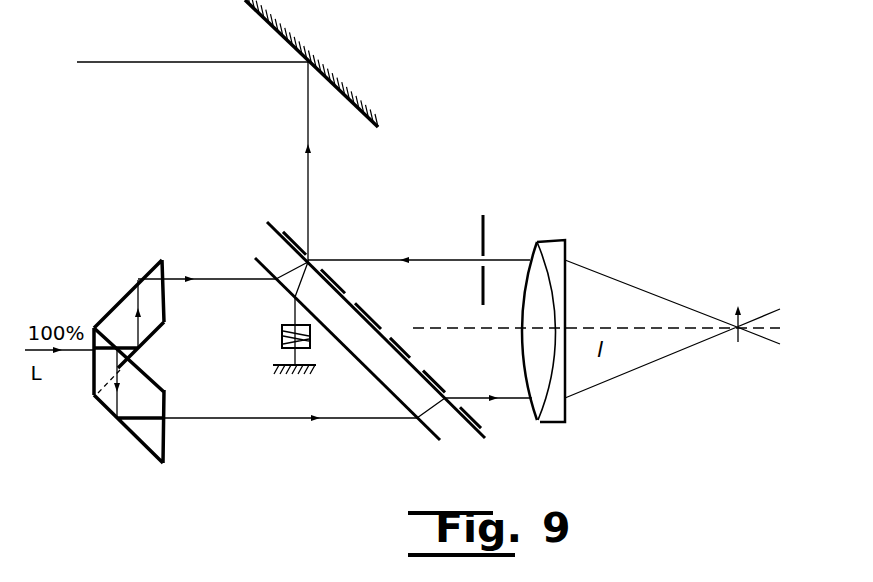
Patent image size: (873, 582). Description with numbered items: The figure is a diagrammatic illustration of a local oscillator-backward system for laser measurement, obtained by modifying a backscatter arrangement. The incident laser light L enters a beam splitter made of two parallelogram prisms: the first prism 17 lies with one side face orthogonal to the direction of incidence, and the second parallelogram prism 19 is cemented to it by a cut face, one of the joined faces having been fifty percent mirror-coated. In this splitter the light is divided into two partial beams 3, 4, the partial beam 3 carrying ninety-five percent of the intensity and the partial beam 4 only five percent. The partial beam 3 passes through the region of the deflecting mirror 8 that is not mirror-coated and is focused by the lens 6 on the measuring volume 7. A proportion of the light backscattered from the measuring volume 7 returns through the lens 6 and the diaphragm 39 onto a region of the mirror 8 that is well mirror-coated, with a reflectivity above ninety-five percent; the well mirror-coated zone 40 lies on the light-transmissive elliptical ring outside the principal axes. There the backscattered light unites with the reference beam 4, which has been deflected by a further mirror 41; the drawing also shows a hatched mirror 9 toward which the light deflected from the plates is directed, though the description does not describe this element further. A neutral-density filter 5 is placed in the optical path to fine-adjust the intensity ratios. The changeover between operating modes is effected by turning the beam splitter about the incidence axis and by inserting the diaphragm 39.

The partial beam 3 is at (324, 419).
The partial beam 4 is at (223, 309).
The filter 5 is at (286, 328).
The lens 6 is at (547, 240).
The measuring volume 7 is at (757, 343).
The deflecting mirror 8 is at (422, 428).
The mirror 9 is at (311, 63).
The first prism 17 is at (143, 430).
The second parallelogram prism 19 is at (127, 307).
The diaphragm 39 is at (465, 249).
The well mirror-coated zone 40 is at (313, 262).
The further mirror 41 is at (280, 365).